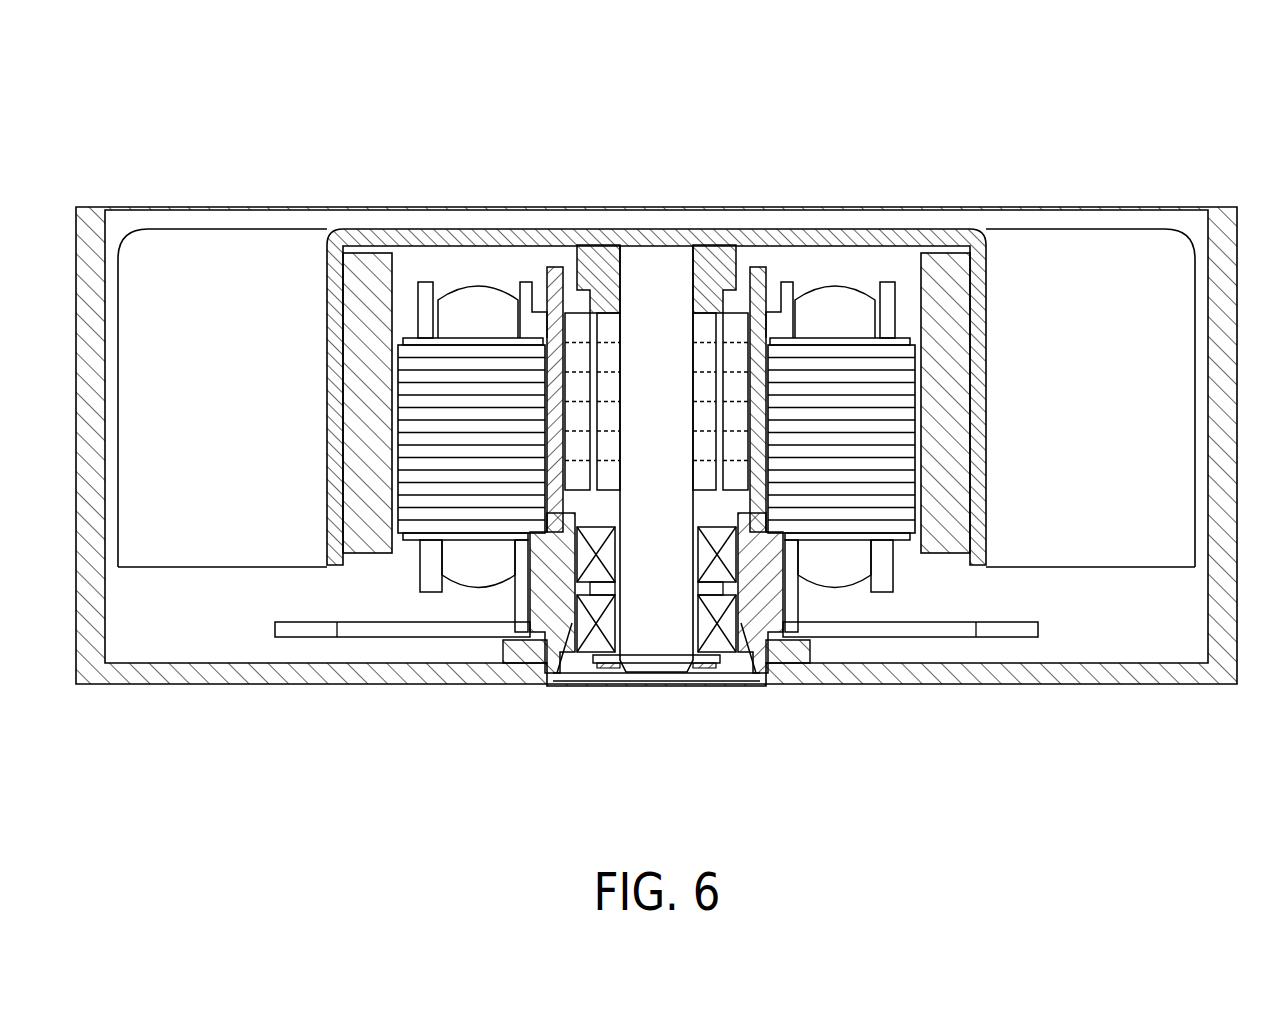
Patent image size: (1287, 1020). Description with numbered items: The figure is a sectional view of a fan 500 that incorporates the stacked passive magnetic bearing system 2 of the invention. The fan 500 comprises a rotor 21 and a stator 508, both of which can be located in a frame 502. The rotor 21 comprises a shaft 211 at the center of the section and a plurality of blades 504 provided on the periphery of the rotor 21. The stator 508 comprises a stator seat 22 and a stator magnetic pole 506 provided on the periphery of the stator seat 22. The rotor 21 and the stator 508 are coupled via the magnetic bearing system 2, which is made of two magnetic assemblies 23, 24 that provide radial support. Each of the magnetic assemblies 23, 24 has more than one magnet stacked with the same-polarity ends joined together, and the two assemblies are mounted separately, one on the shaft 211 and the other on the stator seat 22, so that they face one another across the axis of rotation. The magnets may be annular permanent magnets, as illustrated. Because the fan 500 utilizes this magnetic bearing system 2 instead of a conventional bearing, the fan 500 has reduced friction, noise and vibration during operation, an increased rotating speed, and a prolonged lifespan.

The fan 500 is at (160, 52).
The frame 502 is at (70, 208).
The blades 504 is at (232, 262).
The stator magnetic pole 506 is at (450, 497).
The stator 508 is at (656, 548).
The magnetic bearing system 2 is at (656, 363).
The rotor 21 is at (782, 233).
The shaft 211 is at (657, 265).
The magnetic assembly 23 is at (608, 313).
The magnetic assembly 24 is at (752, 122).
The stator seat 22 is at (627, 704).